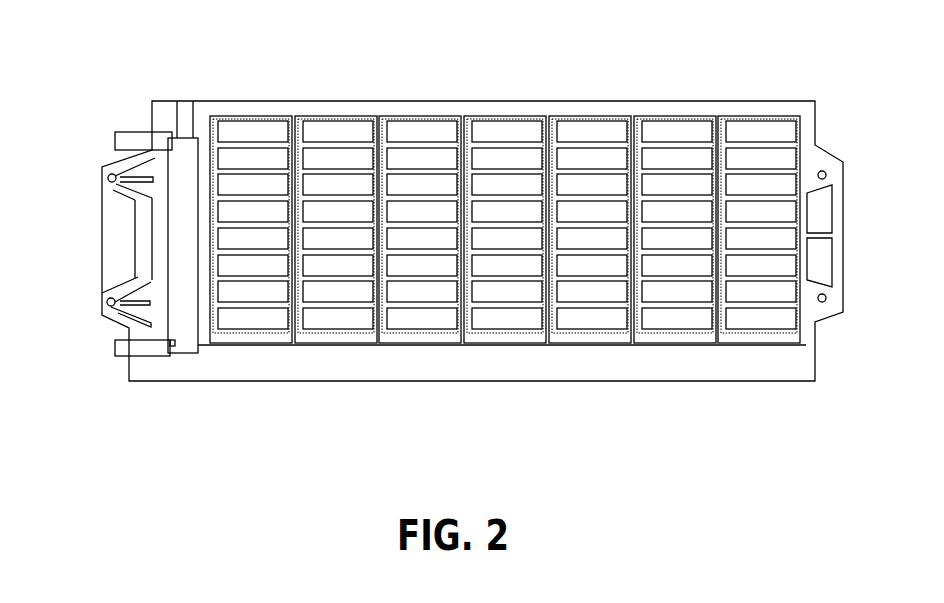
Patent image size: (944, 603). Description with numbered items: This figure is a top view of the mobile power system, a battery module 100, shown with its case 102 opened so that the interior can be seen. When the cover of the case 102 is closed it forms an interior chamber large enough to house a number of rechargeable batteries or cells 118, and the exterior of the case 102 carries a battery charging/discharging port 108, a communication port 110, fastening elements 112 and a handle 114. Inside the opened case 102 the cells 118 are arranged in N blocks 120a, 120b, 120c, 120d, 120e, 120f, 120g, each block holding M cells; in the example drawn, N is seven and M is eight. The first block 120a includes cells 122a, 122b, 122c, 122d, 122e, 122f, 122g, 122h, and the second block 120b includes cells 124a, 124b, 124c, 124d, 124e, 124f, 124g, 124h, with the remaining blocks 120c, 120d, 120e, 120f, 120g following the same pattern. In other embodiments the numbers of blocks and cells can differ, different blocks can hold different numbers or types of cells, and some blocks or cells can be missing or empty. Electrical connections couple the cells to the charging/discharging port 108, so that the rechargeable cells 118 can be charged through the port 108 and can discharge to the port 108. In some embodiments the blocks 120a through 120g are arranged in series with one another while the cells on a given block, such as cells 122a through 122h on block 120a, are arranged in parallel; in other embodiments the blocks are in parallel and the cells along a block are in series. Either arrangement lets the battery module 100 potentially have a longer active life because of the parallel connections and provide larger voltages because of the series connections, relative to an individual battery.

The battery module 100 is at (457, 271).
The case 102 is at (197, 382).
The battery charging/discharging port 108 is at (137, 352).
The communication port 110 is at (140, 140).
The fastening element 112 is at (106, 180).
The handle 114 is at (110, 259).
The cells 118 is at (683, 110).
The first block 120a is at (261, 246).
The second block 120b is at (346, 246).
The block 120c is at (419, 333).
The block 120d is at (504, 333).
The block 120e is at (589, 333).
The block 120f is at (674, 333).
The block 120g is at (758, 333).
The cell 122a is at (233, 326).
The cell 122b is at (233, 300).
The cell 122c is at (233, 274).
The cell 122d is at (233, 246).
The cell 122e is at (233, 220).
The cell 122f is at (233, 192).
The cell 122g is at (233, 166).
The cell 122h is at (233, 140).
The cell 124a is at (318, 326).
The cell 124b is at (318, 300).
The cell 124c is at (318, 274).
The cell 124d is at (318, 246).
The cell 124e is at (318, 220).
The cell 124f is at (318, 192).
The cell 124g is at (318, 166).
The cell 124h is at (318, 140).